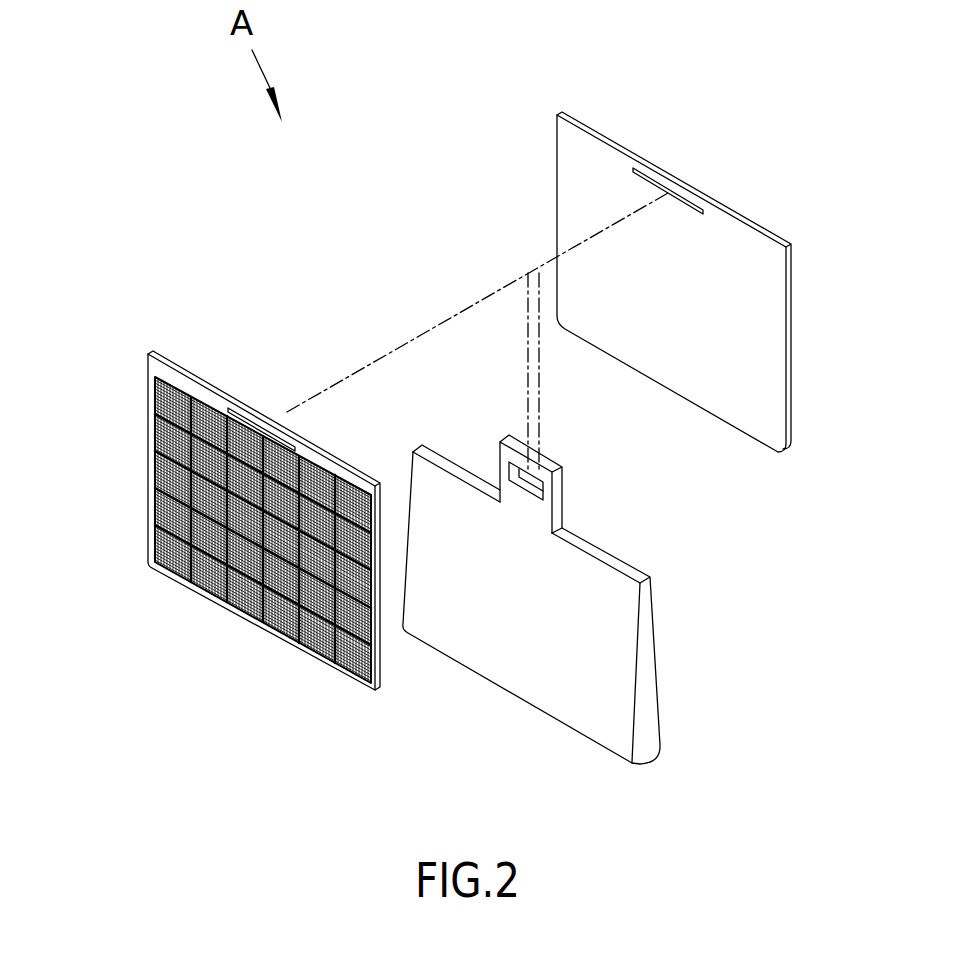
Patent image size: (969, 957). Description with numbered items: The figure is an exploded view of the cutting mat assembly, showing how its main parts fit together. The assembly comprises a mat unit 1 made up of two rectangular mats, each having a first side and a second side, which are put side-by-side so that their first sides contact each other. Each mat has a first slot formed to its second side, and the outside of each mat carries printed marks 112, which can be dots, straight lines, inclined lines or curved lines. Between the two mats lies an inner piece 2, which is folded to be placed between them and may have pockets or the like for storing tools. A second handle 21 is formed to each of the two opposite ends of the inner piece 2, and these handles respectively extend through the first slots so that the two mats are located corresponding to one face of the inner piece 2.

The mat unit 1 is at (770, 195).
The printed marks 112 is at (160, 438).
The inner piece 2 is at (651, 546).
The second handle 21 is at (565, 480).